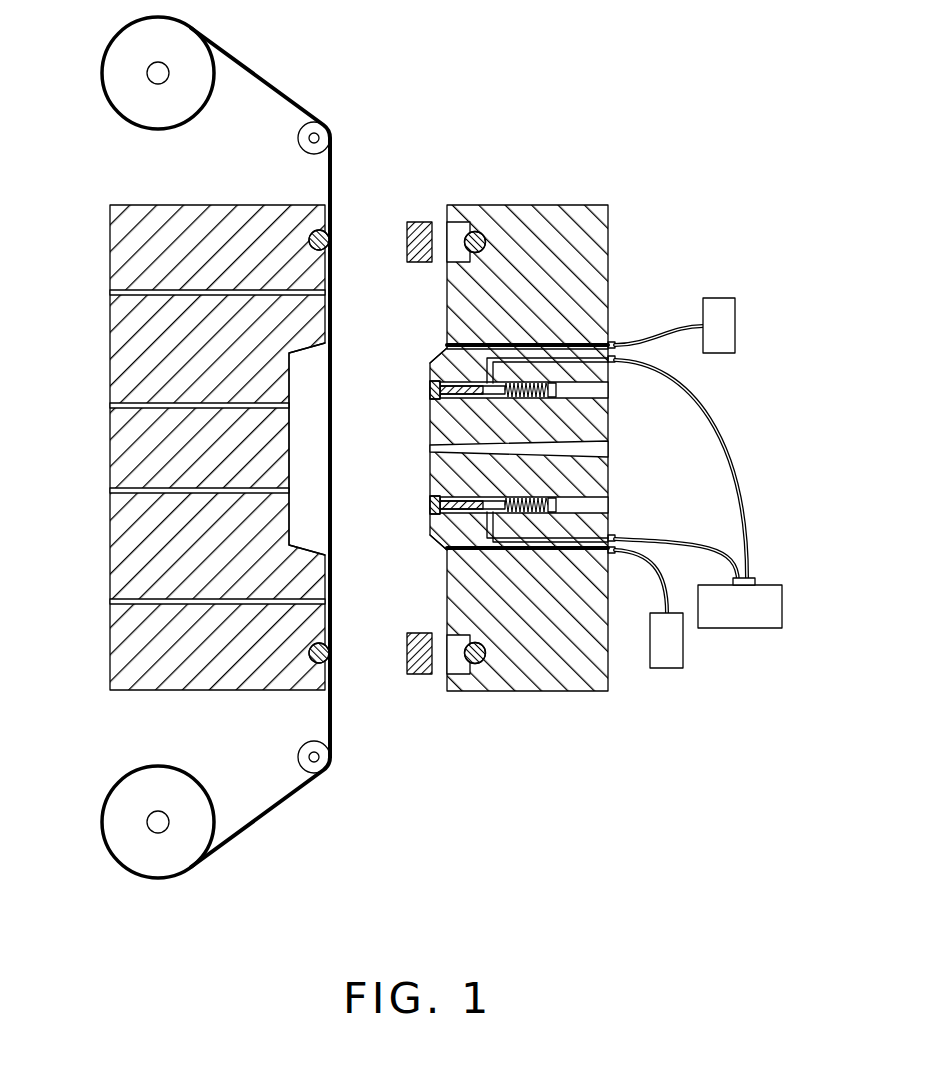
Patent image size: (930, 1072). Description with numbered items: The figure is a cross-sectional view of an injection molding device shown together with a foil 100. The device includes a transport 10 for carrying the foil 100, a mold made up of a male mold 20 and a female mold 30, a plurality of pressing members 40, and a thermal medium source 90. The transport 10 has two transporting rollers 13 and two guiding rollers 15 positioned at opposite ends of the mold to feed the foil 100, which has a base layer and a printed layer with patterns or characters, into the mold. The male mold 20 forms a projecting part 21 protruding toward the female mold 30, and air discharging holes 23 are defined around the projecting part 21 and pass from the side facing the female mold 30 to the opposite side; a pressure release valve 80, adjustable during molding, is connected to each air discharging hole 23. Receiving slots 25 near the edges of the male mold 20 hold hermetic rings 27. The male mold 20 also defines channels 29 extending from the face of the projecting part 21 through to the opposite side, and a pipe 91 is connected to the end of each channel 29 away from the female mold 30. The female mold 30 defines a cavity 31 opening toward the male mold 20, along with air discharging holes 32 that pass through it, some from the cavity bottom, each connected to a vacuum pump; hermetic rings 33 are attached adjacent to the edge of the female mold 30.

The transport 10 is at (217, 442).
The foil 100 is at (277, 88).
The transporting rollers 13 is at (133, 68).
The guiding rollers 15 is at (331, 138).
The male mold 20 is at (528, 454).
The projecting part 21 is at (455, 429).
The air discharging holes 23 is at (600, 333).
The receiving slots 25 is at (457, 233).
The hermetic rings 27 is at (476, 233).
The channels 29 is at (457, 512).
The female mold 30 is at (214, 474).
The cavity 31 is at (303, 413).
The air discharging holes 32 is at (115, 292).
The hermetic rings 33 is at (332, 238).
The pressing members 40 is at (417, 225).
The pressure release valve 80 is at (725, 318).
The thermal medium source 90 is at (763, 600).
The pipe 91 is at (717, 422).